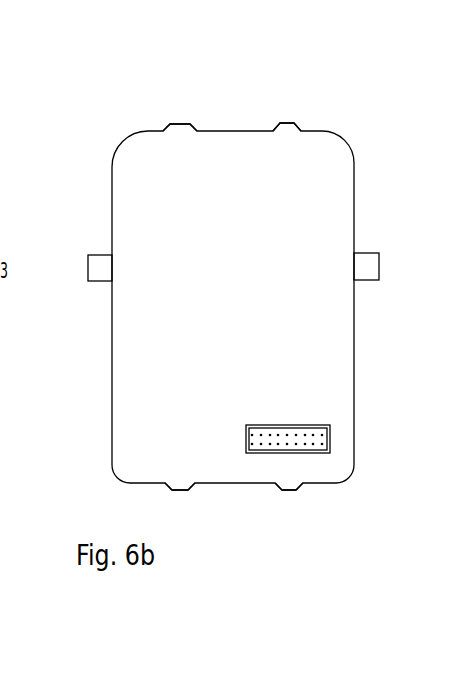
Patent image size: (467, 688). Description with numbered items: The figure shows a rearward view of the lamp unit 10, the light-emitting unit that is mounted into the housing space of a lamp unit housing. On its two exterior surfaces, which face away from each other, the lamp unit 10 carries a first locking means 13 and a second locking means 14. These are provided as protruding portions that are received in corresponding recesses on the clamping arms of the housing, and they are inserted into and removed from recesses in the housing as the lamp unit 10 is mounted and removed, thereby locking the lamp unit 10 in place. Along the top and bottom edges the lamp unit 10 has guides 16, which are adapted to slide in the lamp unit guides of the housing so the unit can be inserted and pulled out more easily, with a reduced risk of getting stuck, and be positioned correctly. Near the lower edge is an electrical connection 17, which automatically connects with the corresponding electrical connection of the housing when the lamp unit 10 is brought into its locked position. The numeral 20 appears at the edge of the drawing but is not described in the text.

The lamp unit 10 is at (150, 113).
The first locking means 13 is at (80, 272).
The second locking means 14 is at (400, 265).
The guides 16 is at (187, 127).
The electrical connection 17 is at (309, 457).
The element 20 (cut off) 20 is at (0, 233).